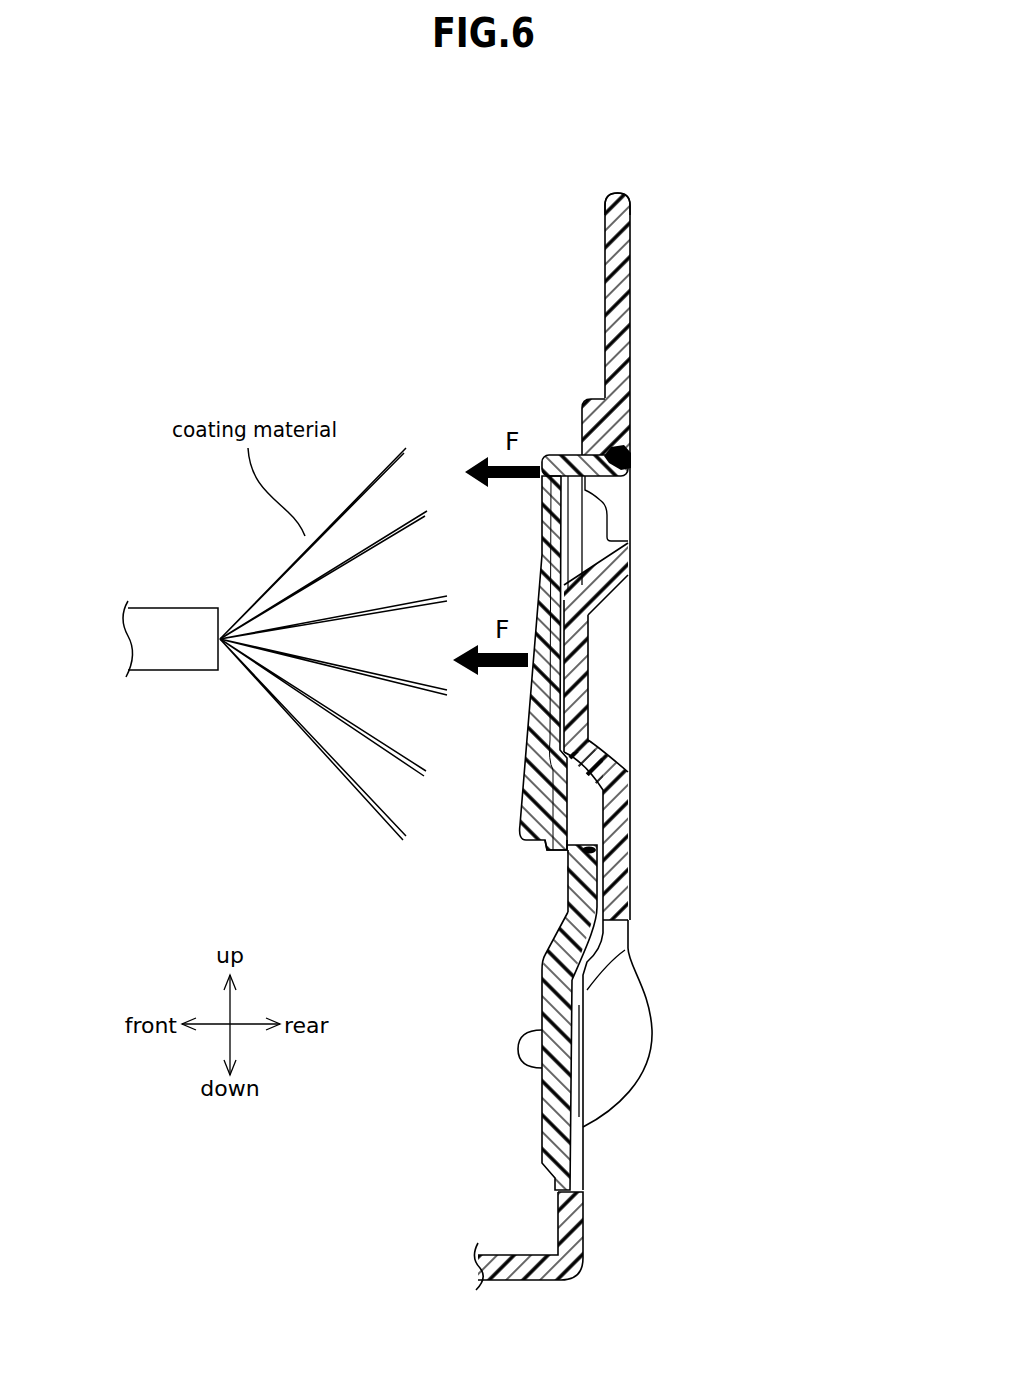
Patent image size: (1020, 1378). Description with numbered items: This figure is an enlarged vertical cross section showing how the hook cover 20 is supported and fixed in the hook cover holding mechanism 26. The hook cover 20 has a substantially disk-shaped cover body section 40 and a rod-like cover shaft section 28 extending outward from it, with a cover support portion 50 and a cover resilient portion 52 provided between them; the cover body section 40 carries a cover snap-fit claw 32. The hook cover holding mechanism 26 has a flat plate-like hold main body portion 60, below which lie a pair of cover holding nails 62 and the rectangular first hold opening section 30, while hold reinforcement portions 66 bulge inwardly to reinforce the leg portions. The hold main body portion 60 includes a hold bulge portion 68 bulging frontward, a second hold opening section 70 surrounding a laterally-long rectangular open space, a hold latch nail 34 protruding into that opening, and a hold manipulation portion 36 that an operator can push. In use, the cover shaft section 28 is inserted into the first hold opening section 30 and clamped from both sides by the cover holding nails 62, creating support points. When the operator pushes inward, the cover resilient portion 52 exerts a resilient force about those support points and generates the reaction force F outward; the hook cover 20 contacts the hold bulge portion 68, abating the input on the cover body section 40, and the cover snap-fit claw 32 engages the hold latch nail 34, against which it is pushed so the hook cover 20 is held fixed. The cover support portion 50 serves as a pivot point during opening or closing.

The hook cover 20 is at (565, 447).
The hook cover holding mechanism 26 is at (632, 313).
The cover shaft section 28 is at (542, 1110).
The first hold opening section 30 is at (585, 1186).
The cover snap-fit claw 32 is at (632, 463).
The hold latch nail 34 is at (615, 442).
The hold manipulation portion 36 is at (605, 255).
The cover body section 40 is at (540, 556).
The cover support portion 50 is at (546, 848).
The cover resilient portion 52 is at (566, 905).
The hold main body portion 60 is at (632, 847).
The cover holding nails 62 is at (520, 1049).
The hold reinforcement portions 66 is at (650, 1025).
The hold bulge portion 68 is at (590, 684).
The second hold opening section 70 is at (615, 540).